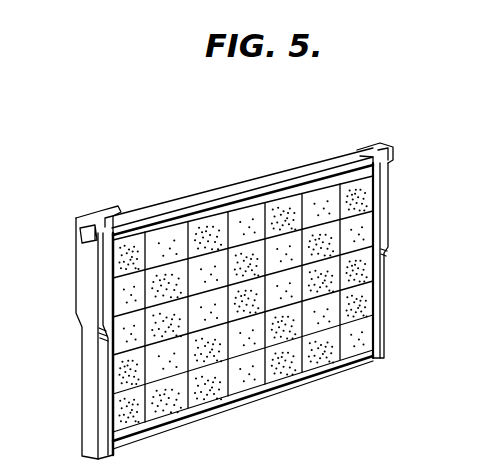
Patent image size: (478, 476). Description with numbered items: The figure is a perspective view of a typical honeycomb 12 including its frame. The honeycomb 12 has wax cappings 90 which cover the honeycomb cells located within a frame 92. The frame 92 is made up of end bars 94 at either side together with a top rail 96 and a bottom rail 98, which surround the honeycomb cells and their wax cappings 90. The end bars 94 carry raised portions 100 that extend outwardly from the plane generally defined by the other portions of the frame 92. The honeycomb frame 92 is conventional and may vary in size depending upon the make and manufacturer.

The honeycomb 12 is at (236, 287).
The wax cappings 90 is at (213, 232).
The frame 92 is at (312, 164).
The end bars 94 is at (95, 360).
The top rail 96 is at (155, 205).
The bottom rail 98 is at (226, 415).
The raised portions 100 is at (106, 282).